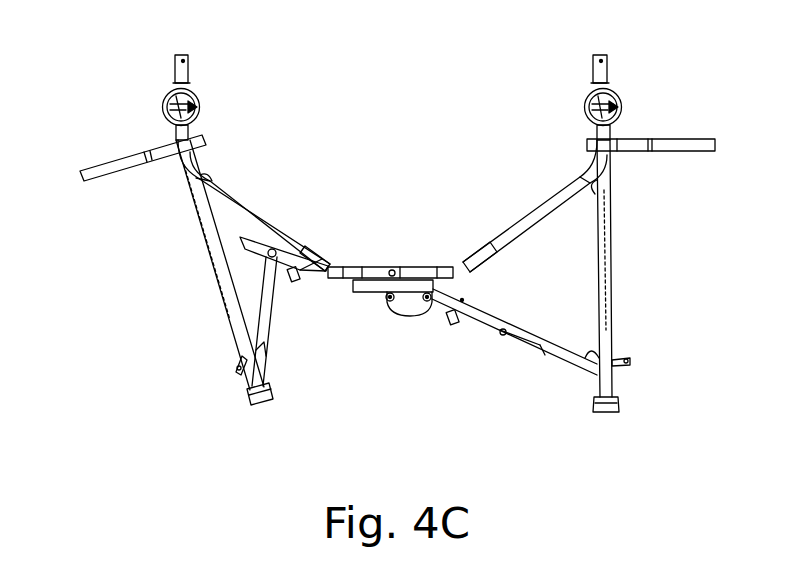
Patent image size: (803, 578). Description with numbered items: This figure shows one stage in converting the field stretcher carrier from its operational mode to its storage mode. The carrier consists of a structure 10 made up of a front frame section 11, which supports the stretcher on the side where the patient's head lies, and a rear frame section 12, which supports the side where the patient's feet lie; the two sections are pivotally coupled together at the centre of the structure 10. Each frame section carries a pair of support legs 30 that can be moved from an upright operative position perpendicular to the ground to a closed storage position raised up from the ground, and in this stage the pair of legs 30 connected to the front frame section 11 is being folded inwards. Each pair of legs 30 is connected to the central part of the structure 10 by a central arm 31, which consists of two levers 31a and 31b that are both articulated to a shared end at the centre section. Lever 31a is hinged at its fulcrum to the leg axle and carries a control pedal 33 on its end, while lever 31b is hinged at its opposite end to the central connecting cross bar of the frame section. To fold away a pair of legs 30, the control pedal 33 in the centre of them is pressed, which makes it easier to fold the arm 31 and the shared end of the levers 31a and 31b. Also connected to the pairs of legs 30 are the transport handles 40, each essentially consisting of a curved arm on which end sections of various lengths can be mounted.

The structure 10 is at (432, 75).
The front frame section 11 is at (242, 205).
The rear frame section 12 is at (523, 220).
The support legs 30 is at (223, 267).
The central arm 31 is at (515, 379).
The lever 31a is at (263, 317).
The lever 31b is at (303, 281).
The control pedal 33 is at (238, 368).
The transport handles 40 is at (107, 165).